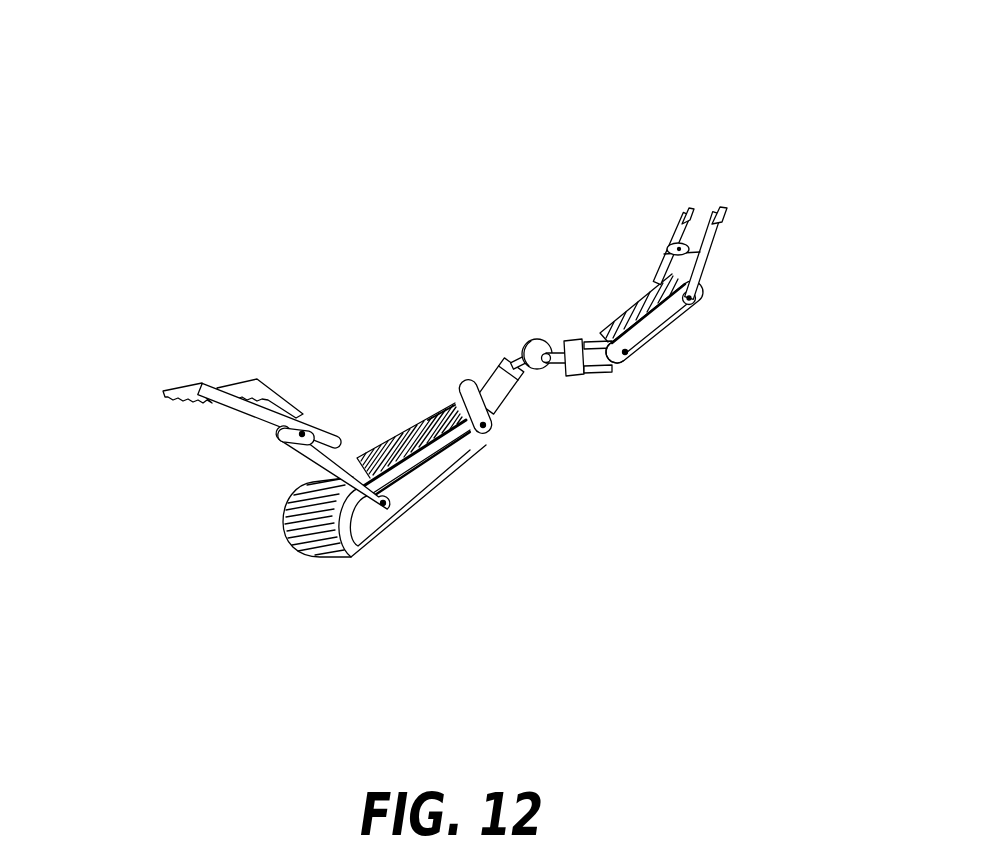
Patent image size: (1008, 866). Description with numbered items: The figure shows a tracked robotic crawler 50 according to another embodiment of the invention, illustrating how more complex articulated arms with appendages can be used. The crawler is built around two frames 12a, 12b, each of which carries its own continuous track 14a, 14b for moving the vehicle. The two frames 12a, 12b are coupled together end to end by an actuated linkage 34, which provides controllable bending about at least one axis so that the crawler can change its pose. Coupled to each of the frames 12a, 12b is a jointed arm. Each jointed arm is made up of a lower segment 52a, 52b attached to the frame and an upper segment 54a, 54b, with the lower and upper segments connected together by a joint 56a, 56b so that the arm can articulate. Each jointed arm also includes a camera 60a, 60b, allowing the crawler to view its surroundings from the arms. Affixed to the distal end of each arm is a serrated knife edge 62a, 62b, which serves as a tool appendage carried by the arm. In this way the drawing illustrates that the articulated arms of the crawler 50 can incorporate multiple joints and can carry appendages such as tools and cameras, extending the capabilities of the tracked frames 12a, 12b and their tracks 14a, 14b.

The tracked robotic crawler 50 is at (323, 161).
The frame 12a is at (463, 447).
The frame 12b is at (670, 317).
The track 14a is at (313, 540).
The track 14b is at (637, 353).
The actuated linkage 34 is at (577, 303).
The lower segment 52a is at (405, 507).
The lower segment 52b is at (697, 280).
The upper segment 54a is at (292, 397).
The upper segment 54b is at (713, 230).
The joint 56a is at (337, 438).
The joint 56b is at (700, 255).
The camera 60a is at (287, 433).
The camera 60b is at (667, 250).
The serrated knife edge 62a is at (163, 391).
The serrated knife edge 62b is at (683, 212).